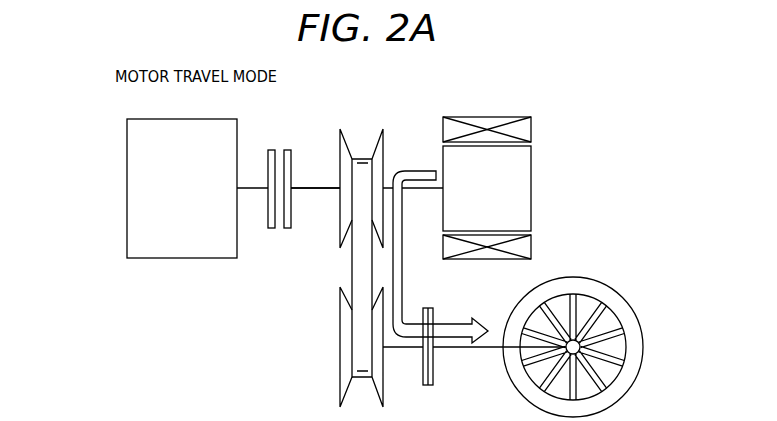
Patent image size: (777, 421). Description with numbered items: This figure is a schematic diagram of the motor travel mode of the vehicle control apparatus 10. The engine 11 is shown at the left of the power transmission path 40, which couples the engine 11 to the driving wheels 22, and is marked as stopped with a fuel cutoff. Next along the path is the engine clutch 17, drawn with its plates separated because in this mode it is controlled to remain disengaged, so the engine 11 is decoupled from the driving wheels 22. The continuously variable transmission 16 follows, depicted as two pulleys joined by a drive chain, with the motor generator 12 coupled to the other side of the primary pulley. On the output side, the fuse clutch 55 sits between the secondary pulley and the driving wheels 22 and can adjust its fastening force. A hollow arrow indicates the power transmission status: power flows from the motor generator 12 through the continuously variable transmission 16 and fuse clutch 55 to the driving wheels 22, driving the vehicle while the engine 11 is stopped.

The vehicle control apparatus 10 is at (589, 90).
The engine 11 is at (127, 163).
The motor generator 12 is at (538, 153).
The continuously variable transmission 16 is at (331, 338).
The engine clutch 17 is at (276, 242).
The driving wheels 22 is at (583, 285).
The power transmission path 40 is at (310, 202).
The fuse clutch 55 is at (441, 305).